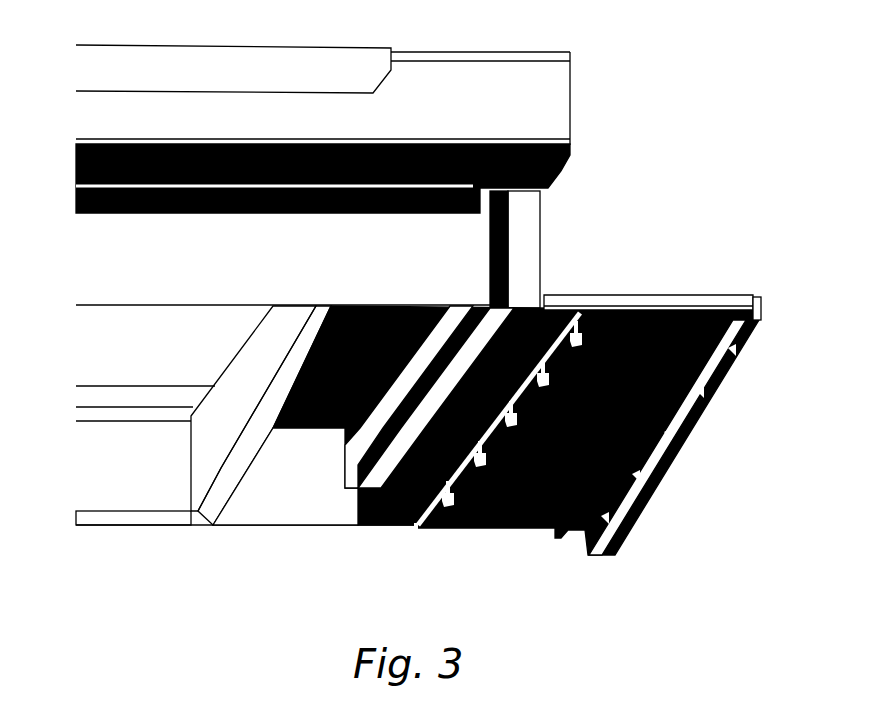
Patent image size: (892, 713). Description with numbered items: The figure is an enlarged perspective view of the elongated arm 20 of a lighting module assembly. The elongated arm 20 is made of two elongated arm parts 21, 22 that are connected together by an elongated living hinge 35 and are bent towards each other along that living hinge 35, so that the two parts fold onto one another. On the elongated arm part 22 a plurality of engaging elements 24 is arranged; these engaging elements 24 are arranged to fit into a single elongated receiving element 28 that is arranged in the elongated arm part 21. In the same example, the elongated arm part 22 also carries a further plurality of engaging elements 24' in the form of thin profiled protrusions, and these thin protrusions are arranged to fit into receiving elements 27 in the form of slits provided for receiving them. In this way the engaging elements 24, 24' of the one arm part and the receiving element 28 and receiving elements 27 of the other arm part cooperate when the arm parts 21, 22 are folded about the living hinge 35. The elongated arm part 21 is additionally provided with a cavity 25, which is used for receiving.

The elongated arm 20 is at (738, 228).
The elongated arm part 21 is at (287, 402).
The elongated arm part 22 is at (694, 293).
The engaging elements 24 is at (668, 437).
The engaging elements 24' is at (498, 396).
The cavity 25 is at (241, 495).
The receiving elements 27 is at (387, 457).
The elongated receiving element 28 is at (178, 505).
The living hinge 35 is at (540, 298).